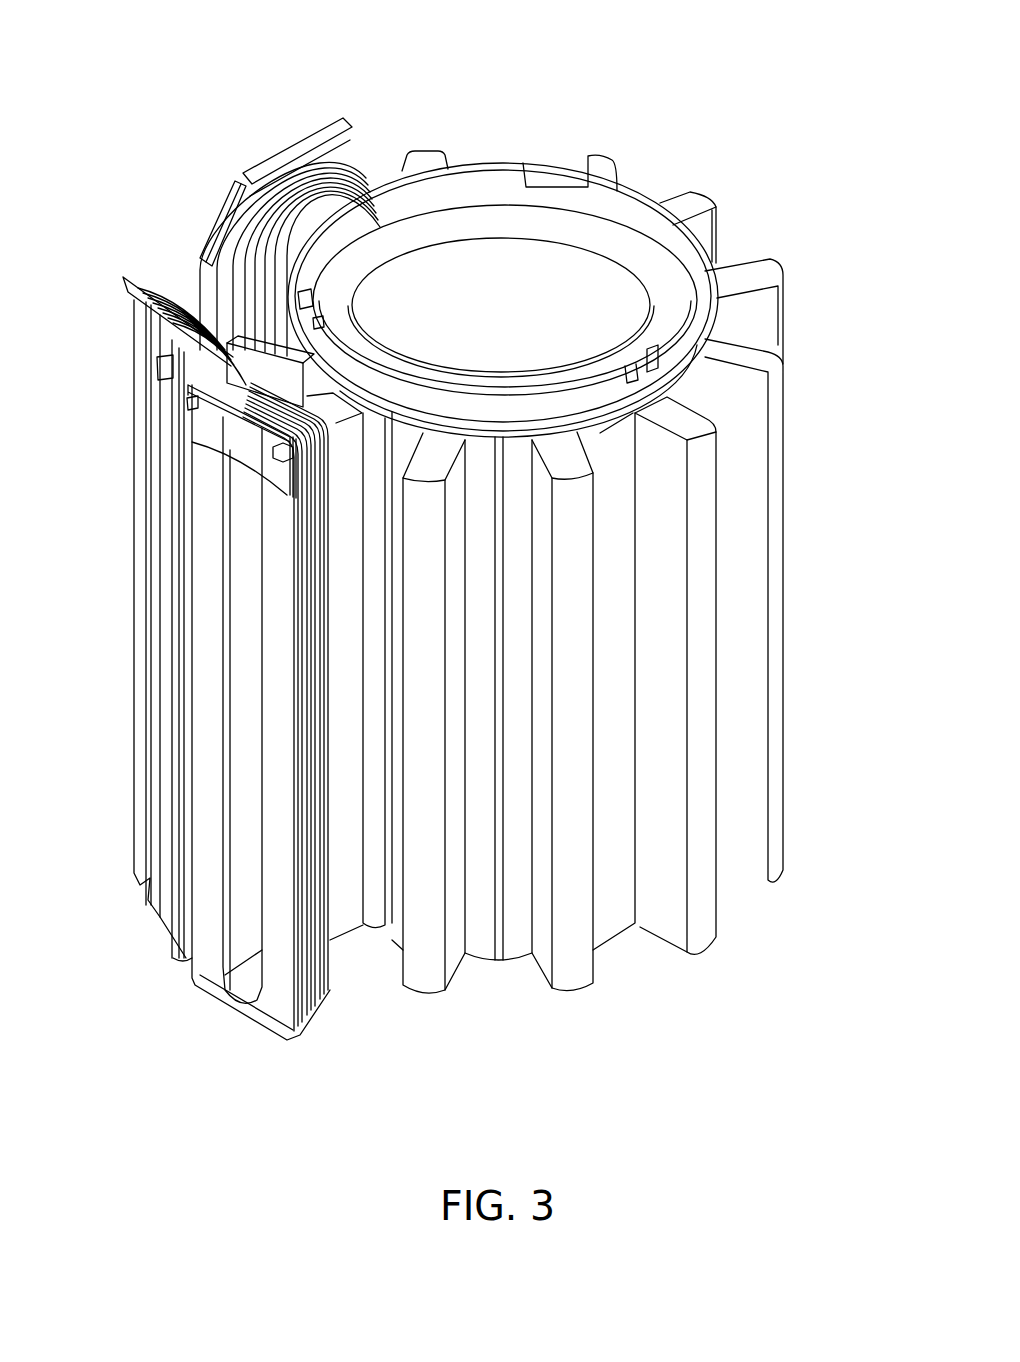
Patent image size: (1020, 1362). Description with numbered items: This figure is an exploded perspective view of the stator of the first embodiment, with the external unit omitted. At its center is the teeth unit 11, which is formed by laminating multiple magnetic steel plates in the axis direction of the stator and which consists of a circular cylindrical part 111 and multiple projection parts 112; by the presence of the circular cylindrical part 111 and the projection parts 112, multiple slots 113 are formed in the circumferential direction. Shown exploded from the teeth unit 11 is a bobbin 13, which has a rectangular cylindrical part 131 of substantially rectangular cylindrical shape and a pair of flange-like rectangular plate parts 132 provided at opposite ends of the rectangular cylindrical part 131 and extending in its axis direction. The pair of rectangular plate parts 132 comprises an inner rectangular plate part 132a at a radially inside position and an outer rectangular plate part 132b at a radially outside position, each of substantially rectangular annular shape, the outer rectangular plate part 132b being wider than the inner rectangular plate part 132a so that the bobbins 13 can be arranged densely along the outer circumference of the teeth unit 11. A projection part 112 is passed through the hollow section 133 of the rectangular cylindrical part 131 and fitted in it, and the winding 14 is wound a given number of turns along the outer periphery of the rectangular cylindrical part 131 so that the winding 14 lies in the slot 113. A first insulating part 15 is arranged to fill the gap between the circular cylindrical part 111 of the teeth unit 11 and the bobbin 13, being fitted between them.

The teeth unit 11 is at (580, 541).
The circular cylindrical part 111 is at (493, 160).
The projection part 112 is at (683, 670).
The slot 113 is at (658, 757).
The bobbin 13 is at (205, 732).
The rectangular cylindrical part 131 is at (243, 918).
The rectangular plate parts 132 is at (279, 785).
The inner rectangular plate part 132a is at (330, 992).
The outer rectangular plate part 132b is at (272, 1015).
The hollow section 133 is at (251, 857).
The winding 14 is at (170, 283).
The first insulating part 15 is at (500, 915).